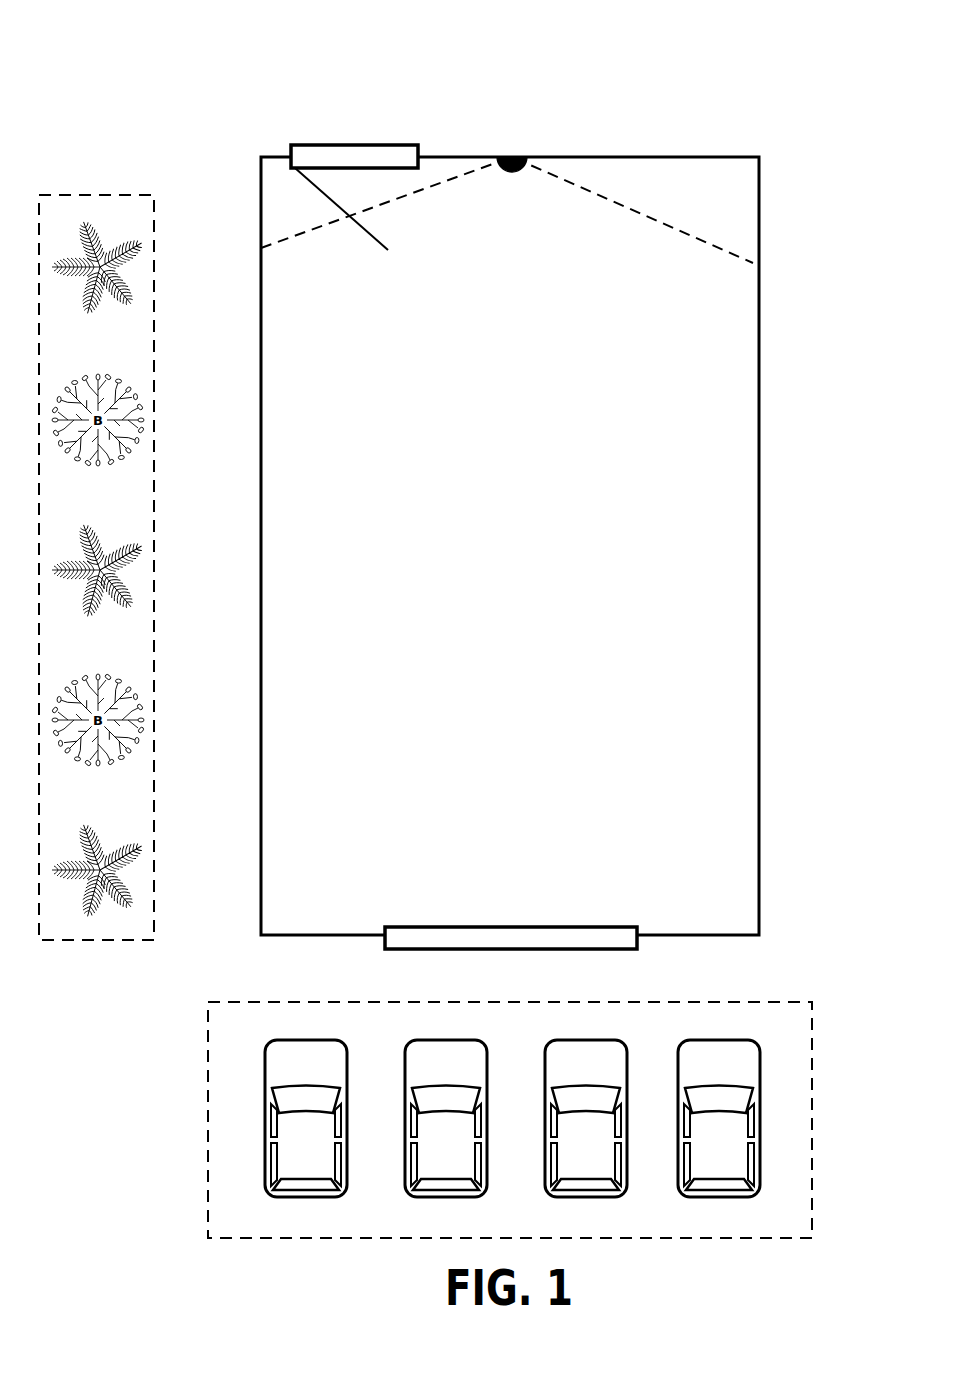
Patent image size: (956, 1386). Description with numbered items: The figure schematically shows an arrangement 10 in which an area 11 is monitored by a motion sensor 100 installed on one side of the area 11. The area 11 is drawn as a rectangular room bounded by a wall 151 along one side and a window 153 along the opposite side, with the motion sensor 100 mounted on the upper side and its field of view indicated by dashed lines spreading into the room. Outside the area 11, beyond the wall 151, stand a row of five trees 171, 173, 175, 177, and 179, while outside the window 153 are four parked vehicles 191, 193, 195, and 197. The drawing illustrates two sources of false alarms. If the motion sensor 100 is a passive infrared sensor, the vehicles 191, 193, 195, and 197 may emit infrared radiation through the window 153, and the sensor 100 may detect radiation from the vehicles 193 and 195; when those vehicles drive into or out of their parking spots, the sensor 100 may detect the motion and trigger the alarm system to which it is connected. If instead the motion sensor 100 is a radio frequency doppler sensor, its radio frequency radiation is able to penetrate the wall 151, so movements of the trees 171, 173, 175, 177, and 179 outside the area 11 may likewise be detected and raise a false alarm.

The system 10 is at (127, 81).
The area 11 is at (759, 157).
The motion sensor 100 is at (513, 157).
The wall 151 is at (261, 538).
The window 153 is at (521, 925).
The tree 171 is at (141, 243).
The tree 173 is at (137, 400).
The tree 175 is at (143, 547).
The tree 177 is at (140, 700).
The tree 179 is at (143, 842).
The vehicle 191 is at (270, 1042).
The vehicle 193 is at (410, 1042).
The vehicle 195 is at (550, 1042).
The vehicle 197 is at (688, 1042).